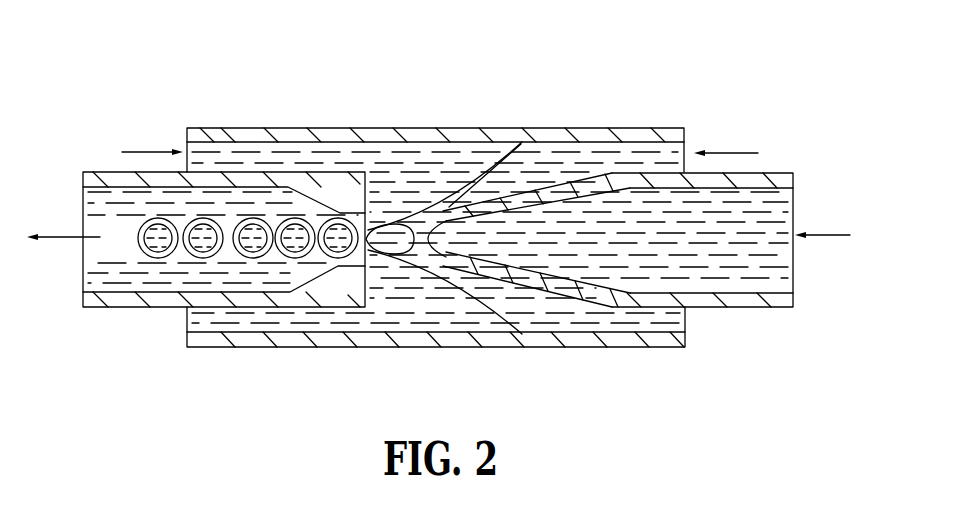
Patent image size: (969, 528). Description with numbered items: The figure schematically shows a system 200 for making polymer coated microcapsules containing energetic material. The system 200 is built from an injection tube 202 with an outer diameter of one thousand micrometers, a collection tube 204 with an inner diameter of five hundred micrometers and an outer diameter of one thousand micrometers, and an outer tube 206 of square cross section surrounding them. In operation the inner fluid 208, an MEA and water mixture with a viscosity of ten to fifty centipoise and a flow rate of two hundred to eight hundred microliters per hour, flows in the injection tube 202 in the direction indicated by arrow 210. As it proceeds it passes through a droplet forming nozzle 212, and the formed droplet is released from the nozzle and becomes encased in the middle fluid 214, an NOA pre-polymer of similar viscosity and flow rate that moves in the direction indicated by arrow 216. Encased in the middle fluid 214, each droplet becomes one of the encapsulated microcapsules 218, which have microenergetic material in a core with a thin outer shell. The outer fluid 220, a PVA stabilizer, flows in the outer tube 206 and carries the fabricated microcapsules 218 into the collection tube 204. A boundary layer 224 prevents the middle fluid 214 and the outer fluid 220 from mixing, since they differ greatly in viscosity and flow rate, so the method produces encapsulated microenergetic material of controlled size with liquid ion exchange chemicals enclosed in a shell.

The system for making encapsulated microenergetic material 200 is at (571, 63).
The injection tube 202 is at (775, 173).
The collection tube 204 is at (147, 308).
The outer tube 206 is at (298, 347).
The inner fluid 208 is at (773, 279).
The arrow 210 is at (825, 235).
The droplet forming nozzle 212 is at (142, 152).
The middle fluid 214 is at (561, 158).
The arrow 216 is at (730, 152).
The encapsulated microcapsules 218 is at (206, 218).
The outer fluid 220 is at (332, 162).
The boundary layer 224 is at (450, 287).